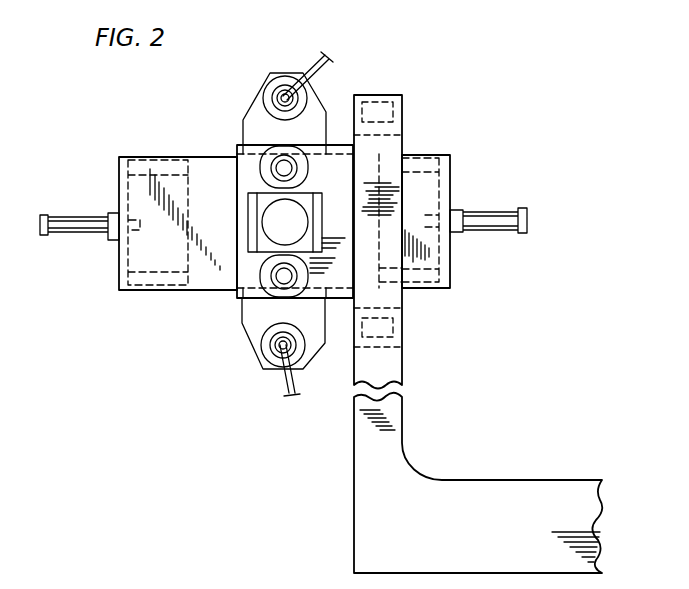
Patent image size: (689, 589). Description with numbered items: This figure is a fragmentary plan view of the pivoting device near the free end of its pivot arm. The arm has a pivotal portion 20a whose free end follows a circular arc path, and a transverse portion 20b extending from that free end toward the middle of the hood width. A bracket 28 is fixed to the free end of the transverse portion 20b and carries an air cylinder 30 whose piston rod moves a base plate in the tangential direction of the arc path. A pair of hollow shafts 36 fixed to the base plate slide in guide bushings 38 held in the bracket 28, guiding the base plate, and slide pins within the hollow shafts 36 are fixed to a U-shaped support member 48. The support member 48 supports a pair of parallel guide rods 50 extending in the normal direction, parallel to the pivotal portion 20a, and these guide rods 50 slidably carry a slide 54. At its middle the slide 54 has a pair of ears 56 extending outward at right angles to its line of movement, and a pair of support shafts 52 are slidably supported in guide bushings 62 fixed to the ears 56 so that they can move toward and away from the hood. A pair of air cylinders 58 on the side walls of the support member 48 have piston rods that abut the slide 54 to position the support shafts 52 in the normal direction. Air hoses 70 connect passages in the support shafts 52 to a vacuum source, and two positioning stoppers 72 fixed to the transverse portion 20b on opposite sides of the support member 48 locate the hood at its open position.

The pivotal portion 20a is at (543, 488).
The transverse portion 20b is at (390, 373).
The bracket 28 is at (340, 258).
The air cylinder 30 is at (272, 223).
The hollow shafts 36 is at (271, 168).
The guide bushings 38 is at (263, 177).
The support member 48 is at (125, 157).
The guide rods 50 is at (423, 158).
The support shafts 52 is at (272, 90).
The slide 54 is at (324, 80).
The ears 56 is at (243, 128).
The air cylinders 58 is at (68, 222).
The guide bushings 62 is at (283, 76).
The air hoses 70 is at (310, 77).
The positioning stoppers 72 is at (393, 108).